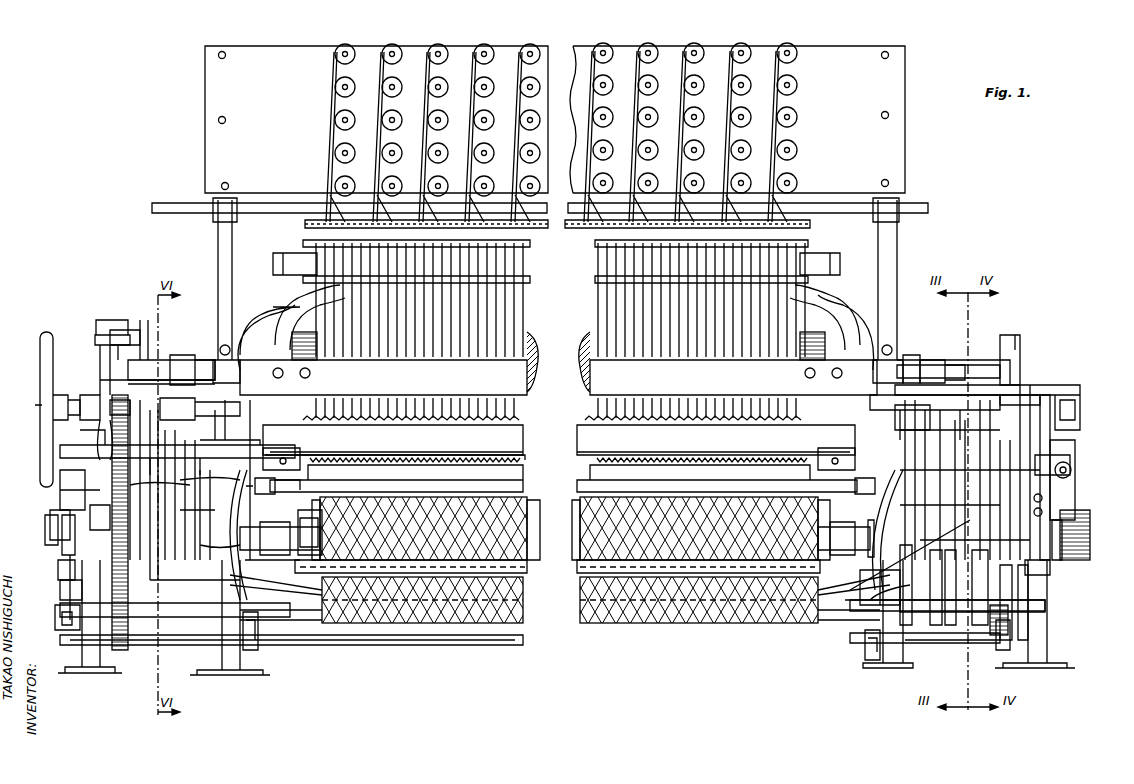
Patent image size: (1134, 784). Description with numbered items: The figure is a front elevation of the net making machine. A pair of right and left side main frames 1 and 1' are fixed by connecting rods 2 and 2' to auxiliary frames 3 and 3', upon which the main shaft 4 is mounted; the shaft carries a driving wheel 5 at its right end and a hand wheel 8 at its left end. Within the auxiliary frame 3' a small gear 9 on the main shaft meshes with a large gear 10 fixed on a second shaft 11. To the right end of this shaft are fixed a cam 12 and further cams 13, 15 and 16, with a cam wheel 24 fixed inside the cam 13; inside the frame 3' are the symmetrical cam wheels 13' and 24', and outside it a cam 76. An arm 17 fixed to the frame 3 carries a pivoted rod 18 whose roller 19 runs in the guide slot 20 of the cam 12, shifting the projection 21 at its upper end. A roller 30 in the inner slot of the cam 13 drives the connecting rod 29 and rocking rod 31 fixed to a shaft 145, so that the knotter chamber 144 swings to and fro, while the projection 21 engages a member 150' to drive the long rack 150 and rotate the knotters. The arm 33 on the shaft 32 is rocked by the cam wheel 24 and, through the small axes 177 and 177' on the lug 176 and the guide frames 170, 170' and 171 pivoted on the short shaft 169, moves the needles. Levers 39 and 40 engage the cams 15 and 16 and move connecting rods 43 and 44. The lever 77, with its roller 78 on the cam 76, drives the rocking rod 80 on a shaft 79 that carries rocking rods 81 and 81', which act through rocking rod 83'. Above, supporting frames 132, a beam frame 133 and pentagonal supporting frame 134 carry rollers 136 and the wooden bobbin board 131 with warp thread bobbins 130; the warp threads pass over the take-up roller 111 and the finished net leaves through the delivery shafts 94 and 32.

The wooden bobbin board 131 is at (240, 90).
The warp thread bobbins 130 is at (347, 115).
The supporting frame 132 is at (222, 248).
The beam frame 133 is at (265, 280).
The pentagonal supporting frame 134 is at (582, 262).
The roller 136 is at (570, 272).
The take-up roller 111 is at (580, 330).
The knotter chamber 144 is at (580, 392).
The lug 176 is at (320, 453).
The small axis 177' is at (559, 447).
The small axis 177 is at (560, 485).
The second shaft 11 is at (565, 515).
The finished net delivery shaft 94 is at (579, 555).
The shaft 32 is at (583, 618).
The shaft 79 is at (406, 641).
The hand wheel 8 is at (40, 343).
The main shaft 4 is at (37, 401).
The connecting rod 2' is at (101, 390).
The connecting rod 29 is at (111, 460).
The auxiliary frame 3' is at (71, 480).
The large gear 10 is at (110, 475).
The cam wheel 13' is at (60, 490).
The cam wheel 24' is at (59, 522).
The cam 76 is at (60, 540).
The roller 78 is at (60, 568).
The lever 77 is at (60, 585).
The rocking rod 80 is at (55, 615).
The short shaft 169 is at (135, 330).
The small gear 9 is at (143, 360).
The shaft 145 is at (180, 356).
The guide frame 170' is at (187, 357).
The side main frame 1' is at (177, 436).
The rocking rod 83' is at (573, 540).
The rocking rod 81' is at (274, 643).
The guide frame 171 is at (935, 360).
The driving wheel 5 is at (912, 350).
The guide frame 170 is at (959, 345).
The rocking rod 31 is at (1010, 345).
The connecting rod 2 is at (1033, 451).
The member 150' is at (999, 396).
The long rack 150 is at (867, 366).
The projection 21 is at (1075, 408).
The auxiliary frame 3 is at (1071, 477).
The arm 17 is at (1072, 462).
The rod 18 is at (1075, 478).
The roller 19 is at (1071, 510).
The guide slot 20 is at (1064, 538).
The cam 12 is at (1092, 560).
The roller 30 is at (1055, 575).
The cam 13 is at (1042, 621).
The cam wheel 24 is at (1046, 638).
The arm 33 is at (980, 630).
The connecting rod 43 is at (940, 625).
The lever 39 is at (948, 625).
The lever 40 is at (900, 635).
The cam 15 is at (938, 640).
The cam 16 is at (870, 592).
The connecting rod 44 is at (880, 610).
The rocking rod 81 is at (849, 646).
The side main frame 1 is at (920, 417).